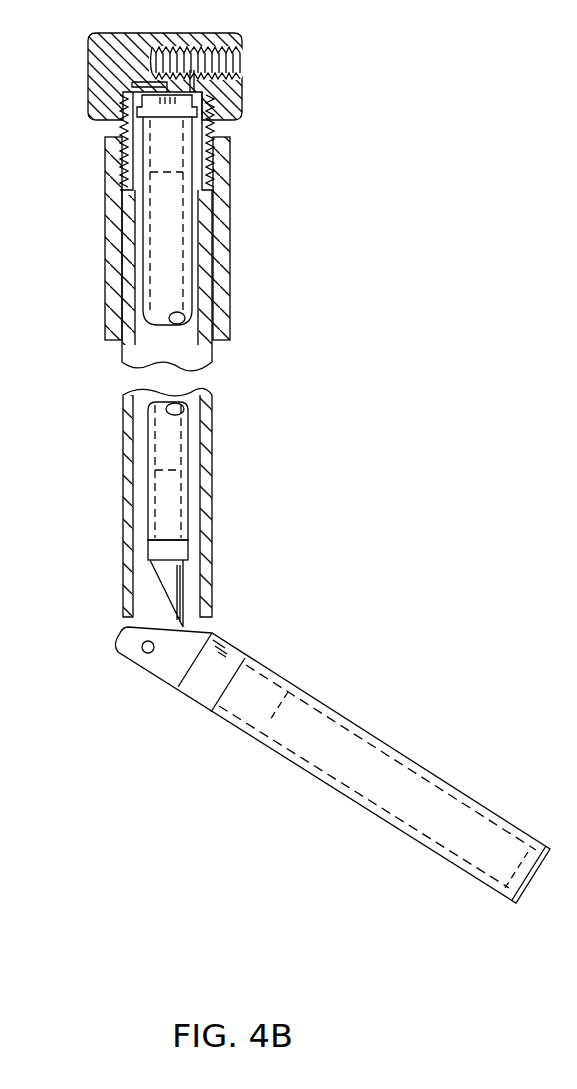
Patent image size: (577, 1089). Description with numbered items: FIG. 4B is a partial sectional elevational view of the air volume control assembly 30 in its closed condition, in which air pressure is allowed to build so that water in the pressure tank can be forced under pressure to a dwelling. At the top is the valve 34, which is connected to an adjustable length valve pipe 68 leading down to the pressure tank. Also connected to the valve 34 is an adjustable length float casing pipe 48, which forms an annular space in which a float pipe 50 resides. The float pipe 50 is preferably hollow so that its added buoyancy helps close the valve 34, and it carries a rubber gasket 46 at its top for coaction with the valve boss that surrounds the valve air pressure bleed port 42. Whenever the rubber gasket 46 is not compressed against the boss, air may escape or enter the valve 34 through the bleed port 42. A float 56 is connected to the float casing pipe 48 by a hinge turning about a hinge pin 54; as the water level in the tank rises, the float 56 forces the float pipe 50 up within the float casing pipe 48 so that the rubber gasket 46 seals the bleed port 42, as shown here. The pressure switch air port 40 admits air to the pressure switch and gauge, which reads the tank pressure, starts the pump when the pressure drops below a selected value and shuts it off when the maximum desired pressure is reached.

The air volume control assembly 30 is at (275, 405).
The valve 34 is at (88, 50).
The pressure switch air port 40 is at (173, 91).
The valve air pressure bleed port 42 is at (137, 68).
The rubber gasket 46 is at (185, 100).
The float casing pipe 48 is at (210, 475).
The float pipe 50 is at (160, 492).
The hinge pin 54 is at (120, 645).
The float 56 is at (175, 663).
The valve pipe 68 is at (227, 230).